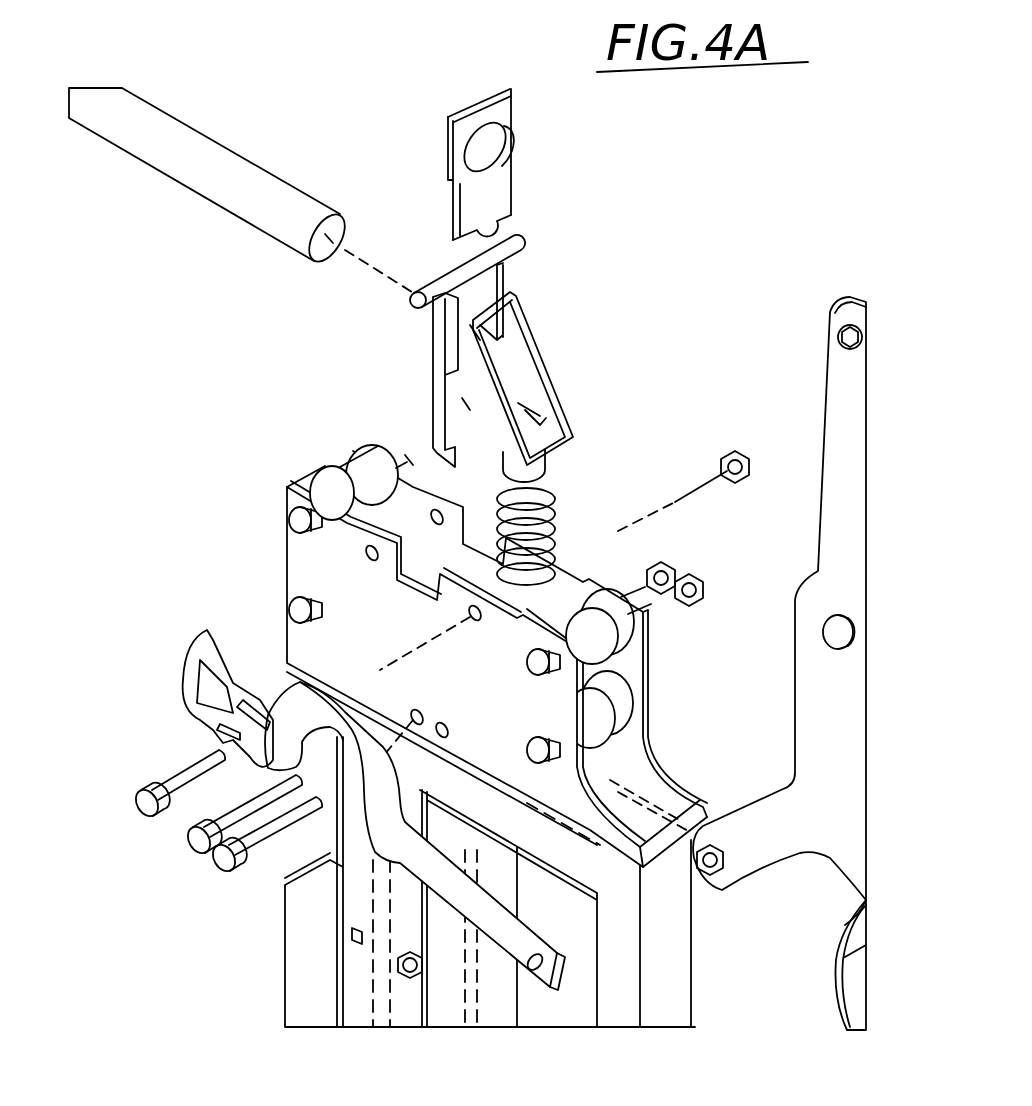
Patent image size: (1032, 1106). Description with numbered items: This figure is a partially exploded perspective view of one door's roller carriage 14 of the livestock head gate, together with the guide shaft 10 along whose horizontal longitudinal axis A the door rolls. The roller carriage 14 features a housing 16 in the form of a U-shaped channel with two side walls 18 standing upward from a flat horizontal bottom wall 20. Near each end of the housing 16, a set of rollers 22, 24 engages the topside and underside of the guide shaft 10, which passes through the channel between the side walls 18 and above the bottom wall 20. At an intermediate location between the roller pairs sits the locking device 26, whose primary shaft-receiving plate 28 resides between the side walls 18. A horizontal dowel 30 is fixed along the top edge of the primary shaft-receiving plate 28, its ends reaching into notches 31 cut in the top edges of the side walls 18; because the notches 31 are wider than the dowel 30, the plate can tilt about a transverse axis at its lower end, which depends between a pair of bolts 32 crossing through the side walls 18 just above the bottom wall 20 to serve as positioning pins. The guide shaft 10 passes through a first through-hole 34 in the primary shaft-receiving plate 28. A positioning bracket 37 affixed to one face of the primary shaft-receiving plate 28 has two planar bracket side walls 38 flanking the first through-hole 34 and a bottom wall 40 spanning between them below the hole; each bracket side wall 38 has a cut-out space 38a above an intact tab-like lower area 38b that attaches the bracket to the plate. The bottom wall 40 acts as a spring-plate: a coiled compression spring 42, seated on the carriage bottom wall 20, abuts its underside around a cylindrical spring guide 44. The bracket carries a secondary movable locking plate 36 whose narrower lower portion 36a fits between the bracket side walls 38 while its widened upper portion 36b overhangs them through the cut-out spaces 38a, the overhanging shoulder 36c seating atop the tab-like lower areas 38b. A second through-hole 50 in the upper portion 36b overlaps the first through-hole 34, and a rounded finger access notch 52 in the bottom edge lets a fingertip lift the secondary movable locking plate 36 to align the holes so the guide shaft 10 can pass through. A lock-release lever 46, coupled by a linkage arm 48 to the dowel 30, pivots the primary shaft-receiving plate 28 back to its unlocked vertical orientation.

The guide shaft 10 is at (176, 130).
The horizontal longitudinal axis A is at (347, 252).
The roller carriage 14 is at (272, 485).
The housing 16 is at (318, 638).
The side walls 18 is at (461, 659).
The bottom wall 20 is at (648, 835).
The rollers 22 is at (335, 470).
The rollers 24 is at (600, 722).
The locking device 26 is at (641, 203).
The primary shaft-receiving plate 28 is at (426, 371).
The dowel 30 is at (424, 292).
The notches 31 is at (463, 552).
The bolts 32 is at (222, 870).
The first through-hole 34 is at (500, 320).
The secondary movable locking plate 36 is at (494, 129).
The lower portion 36a is at (492, 162).
The widened upper portion 36b is at (512, 126).
The overhanging shoulder 36c is at (512, 166).
The positioning bracket 37 is at (512, 381).
The bracket side walls 38 is at (523, 344).
The cut-out space 38a is at (463, 338).
The intact tab-like lower area 38b is at (462, 392).
The bottom wall 40 is at (537, 428).
The coiled compression spring 42 is at (548, 520).
The spring guide 44 is at (546, 470).
The lock-release lever 46 is at (840, 405).
The linkage arm 48 is at (185, 674).
The second through-hole 50 is at (490, 165).
The finger access notch 52 is at (462, 240).